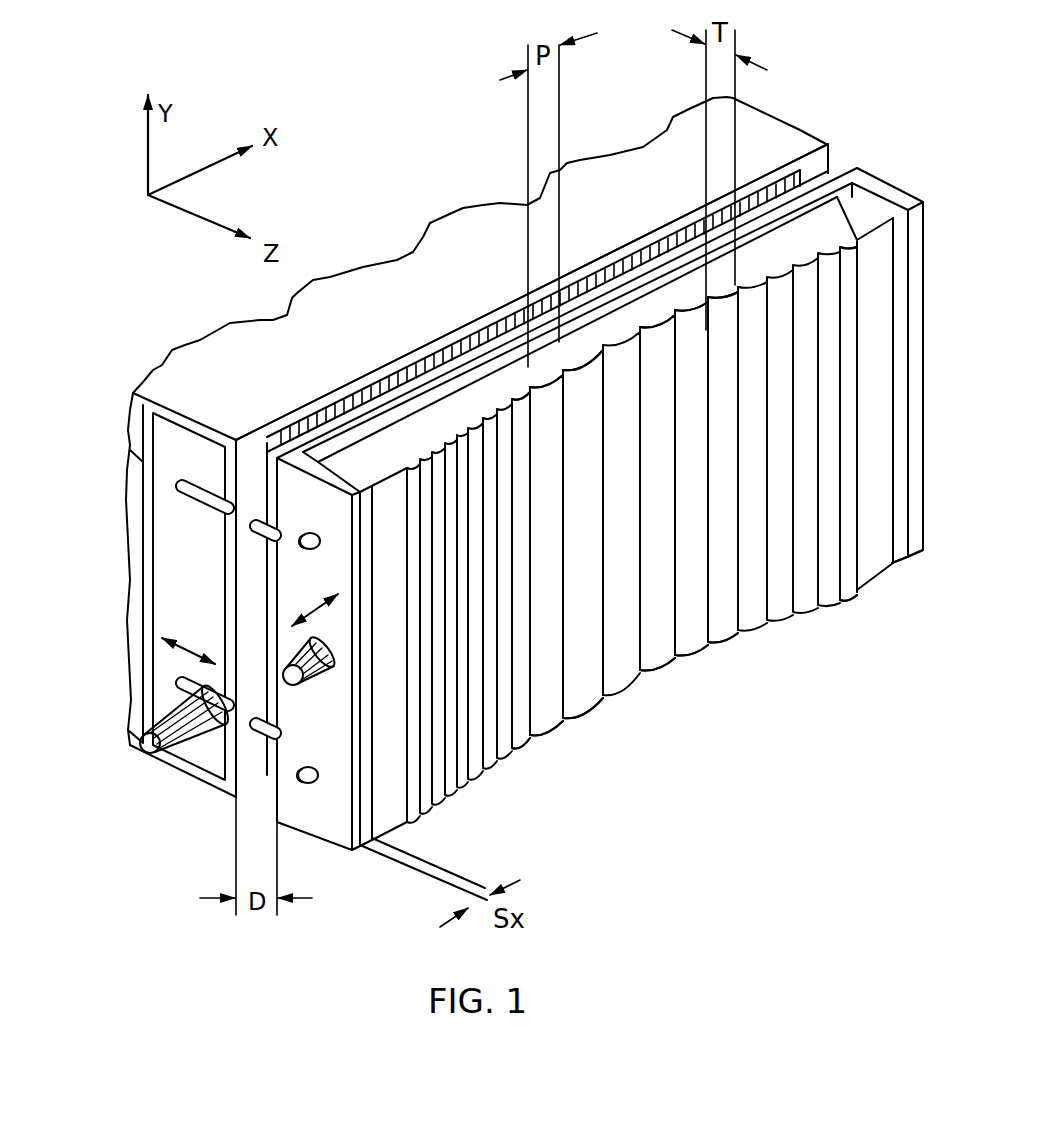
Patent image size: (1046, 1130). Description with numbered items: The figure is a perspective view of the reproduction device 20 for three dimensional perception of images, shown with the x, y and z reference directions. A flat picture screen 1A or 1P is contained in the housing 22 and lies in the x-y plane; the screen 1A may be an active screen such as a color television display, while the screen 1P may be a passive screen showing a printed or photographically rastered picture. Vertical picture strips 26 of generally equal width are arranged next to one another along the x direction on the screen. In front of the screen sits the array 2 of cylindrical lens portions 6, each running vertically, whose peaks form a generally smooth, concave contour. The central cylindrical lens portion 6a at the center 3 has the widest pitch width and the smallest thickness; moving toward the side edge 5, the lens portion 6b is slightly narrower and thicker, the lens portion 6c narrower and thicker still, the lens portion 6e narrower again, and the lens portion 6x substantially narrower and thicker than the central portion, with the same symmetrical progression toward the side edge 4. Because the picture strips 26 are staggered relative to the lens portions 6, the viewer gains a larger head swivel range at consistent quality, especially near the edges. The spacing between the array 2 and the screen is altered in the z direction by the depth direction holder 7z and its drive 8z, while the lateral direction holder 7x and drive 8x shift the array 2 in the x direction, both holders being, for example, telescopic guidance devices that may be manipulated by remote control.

The active picture screen 1A is at (817, 172).
The passive picture screen 1P is at (817, 172).
The array of cylindrical lens portions 2 is at (817, 68).
The center 3 is at (598, 338).
The vertical side edge 4 is at (387, 813).
The vertical side edge 5 is at (877, 556).
The cylindrical lens portions 6 is at (815, 602).
The central cylindrical lens portion 6a is at (590, 700).
The cylindrical lens portion 6b is at (667, 660).
The cylindrical lens portion 6c is at (703, 643).
The cylindrical lens portion 6e is at (732, 635).
The cylindrical lens portion 6x is at (848, 600).
The lateral direction holder 7x is at (306, 552).
The depth direction holder 7z is at (170, 760).
The lateral drive 8x is at (300, 784).
The depth drive 8z is at (147, 752).
The reproduction device 20 is at (125, 815).
The housing 22 is at (152, 520).
The picture strips 26 is at (496, 330).